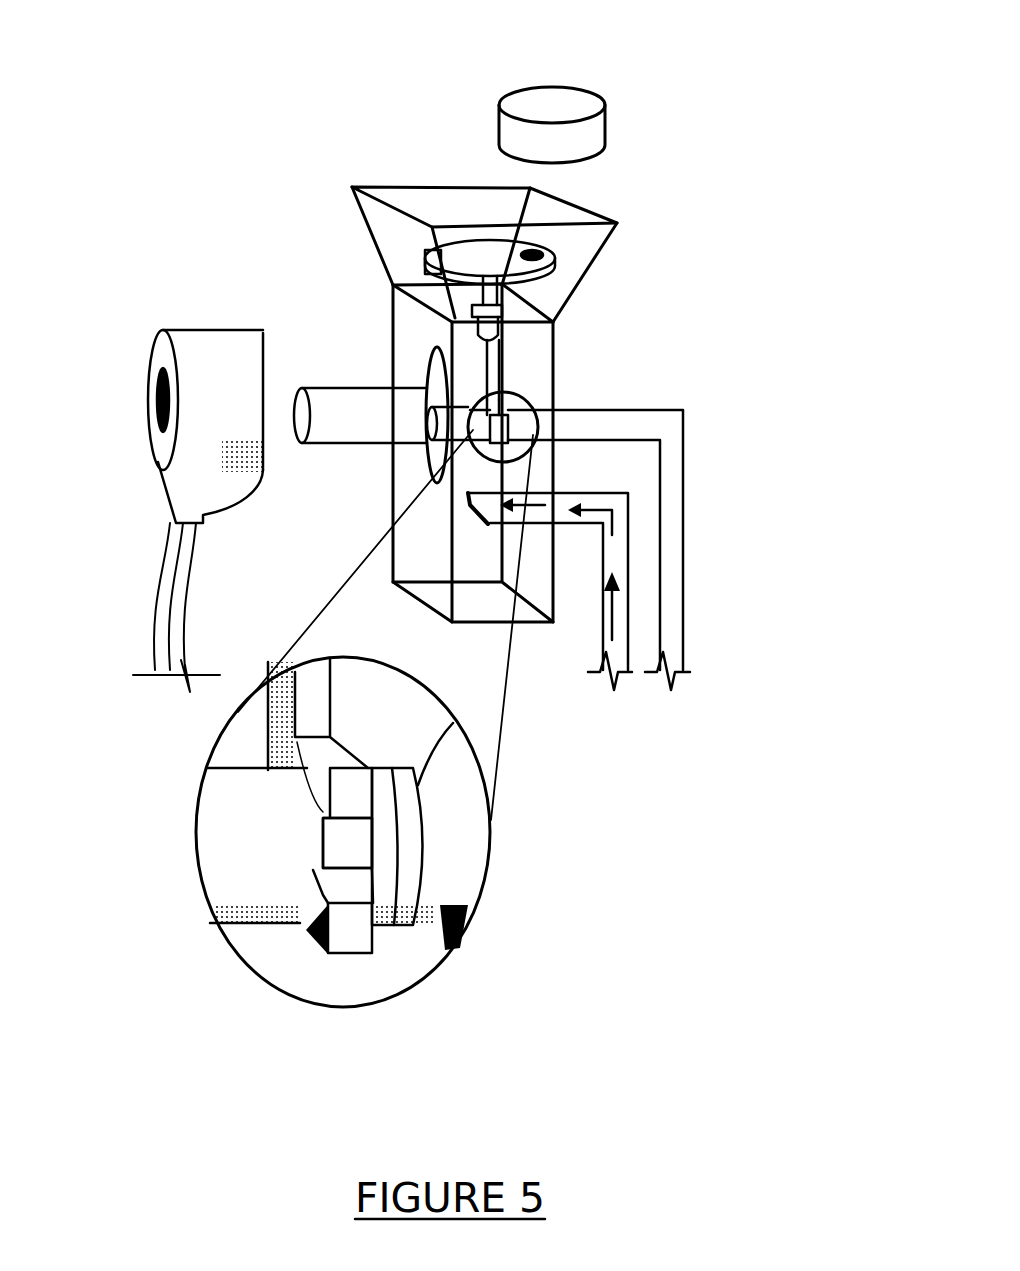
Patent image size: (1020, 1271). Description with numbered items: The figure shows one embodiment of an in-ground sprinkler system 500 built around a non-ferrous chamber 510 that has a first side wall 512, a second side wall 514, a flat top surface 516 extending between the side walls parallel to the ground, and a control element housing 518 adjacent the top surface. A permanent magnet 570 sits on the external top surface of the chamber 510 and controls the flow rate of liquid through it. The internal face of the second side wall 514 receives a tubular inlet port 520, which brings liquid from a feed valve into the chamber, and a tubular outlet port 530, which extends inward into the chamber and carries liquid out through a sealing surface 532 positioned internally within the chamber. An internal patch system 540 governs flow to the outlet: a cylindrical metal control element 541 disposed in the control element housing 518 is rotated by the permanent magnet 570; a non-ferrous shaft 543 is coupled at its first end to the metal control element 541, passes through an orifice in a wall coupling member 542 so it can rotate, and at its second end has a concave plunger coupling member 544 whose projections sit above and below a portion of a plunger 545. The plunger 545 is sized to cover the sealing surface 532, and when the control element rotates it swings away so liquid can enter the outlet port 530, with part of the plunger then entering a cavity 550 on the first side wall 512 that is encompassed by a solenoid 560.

The in-ground sprinkler system 500 is at (270, 125).
The chamber 510 is at (535, 368).
The first side wall 512 is at (422, 332).
The second side wall 514 is at (553, 387).
The top surface 516 is at (440, 200).
The control element housing 518 is at (587, 258).
The inlet port 520 is at (603, 577).
The outlet port 530 is at (687, 555).
The sealing surface 532 is at (430, 837).
The internal patch system 540 is at (513, 318).
The metal control element 541 is at (495, 253).
The wall coupling member 542 is at (490, 330).
The shaft 543 is at (428, 292).
The plunger coupling member 544 is at (347, 912).
The plunger 545 is at (377, 857).
The cavity 550 is at (363, 423).
The solenoid 560 is at (213, 350).
The permanent magnet 570 is at (603, 123).